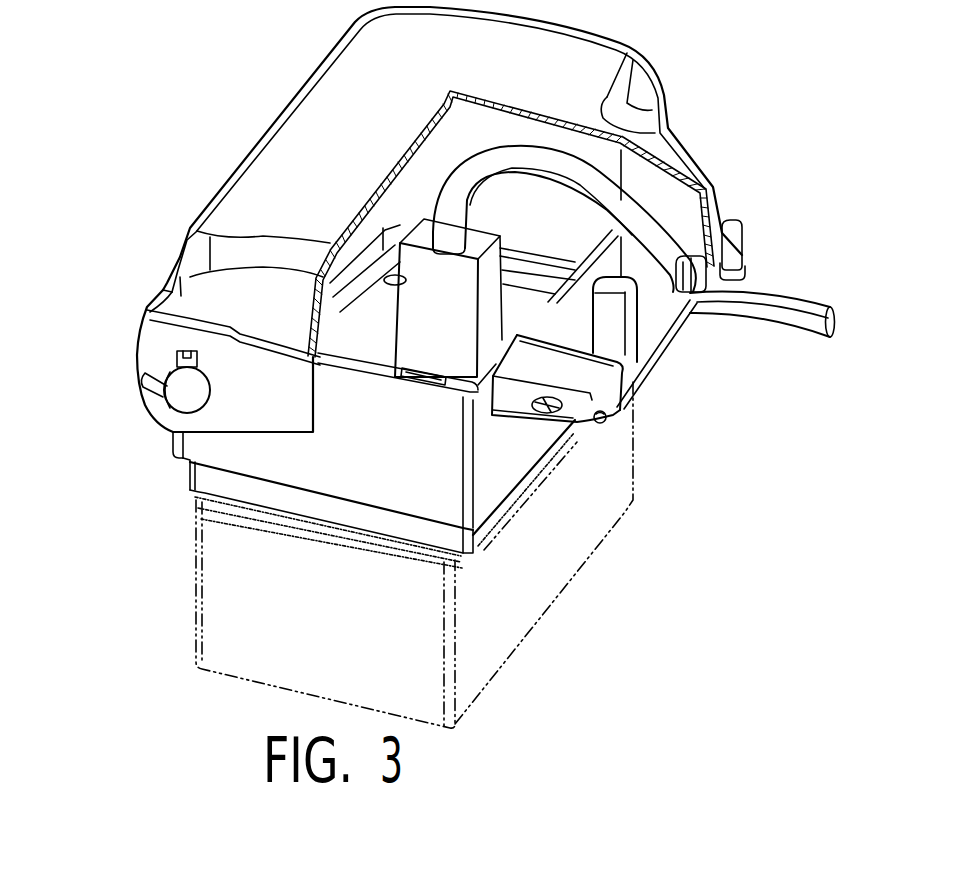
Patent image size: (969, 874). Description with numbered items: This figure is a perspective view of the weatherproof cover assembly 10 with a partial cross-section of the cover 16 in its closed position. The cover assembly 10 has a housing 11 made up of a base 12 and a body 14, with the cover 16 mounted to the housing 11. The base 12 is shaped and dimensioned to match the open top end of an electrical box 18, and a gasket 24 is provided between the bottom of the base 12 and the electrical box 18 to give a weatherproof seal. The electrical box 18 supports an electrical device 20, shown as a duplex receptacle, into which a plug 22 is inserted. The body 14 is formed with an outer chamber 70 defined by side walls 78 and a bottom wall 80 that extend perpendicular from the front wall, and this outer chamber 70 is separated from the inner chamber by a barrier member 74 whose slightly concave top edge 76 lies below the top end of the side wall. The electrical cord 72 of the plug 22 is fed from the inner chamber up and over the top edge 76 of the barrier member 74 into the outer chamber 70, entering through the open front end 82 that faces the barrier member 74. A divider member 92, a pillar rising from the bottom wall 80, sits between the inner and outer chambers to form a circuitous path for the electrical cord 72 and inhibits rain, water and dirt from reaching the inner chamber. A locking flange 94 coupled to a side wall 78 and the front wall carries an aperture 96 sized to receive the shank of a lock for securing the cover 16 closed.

The weatherproof cover assembly 10 is at (148, 206).
The housing 11 is at (165, 483).
The base 12 is at (478, 543).
The body 14 is at (158, 443).
The cover 16 is at (672, 59).
The electrical box 18 is at (510, 672).
The electrical device 20 is at (377, 420).
The plug 22 is at (450, 328).
The gasket 24 is at (475, 571).
The outer chamber 70 is at (674, 369).
The electrical cord 72 is at (746, 287).
The barrier member 74 is at (607, 267).
The top edge 76 is at (583, 262).
The side walls 78 is at (634, 315).
The bottom wall 80 is at (597, 377).
The open front end 82 is at (680, 309).
The divider member 92 is at (637, 317).
The locking flange 94 is at (517, 418).
The aperture 96 is at (553, 407).